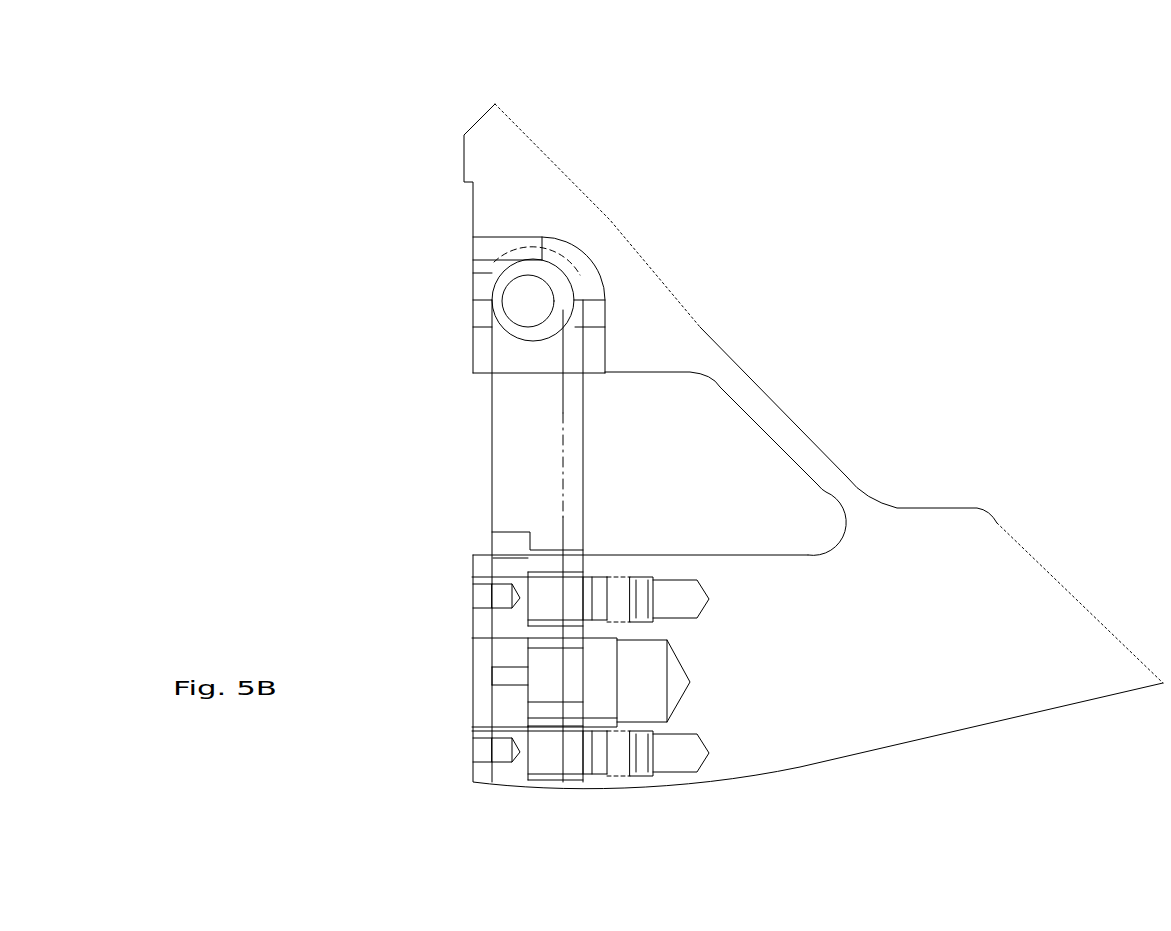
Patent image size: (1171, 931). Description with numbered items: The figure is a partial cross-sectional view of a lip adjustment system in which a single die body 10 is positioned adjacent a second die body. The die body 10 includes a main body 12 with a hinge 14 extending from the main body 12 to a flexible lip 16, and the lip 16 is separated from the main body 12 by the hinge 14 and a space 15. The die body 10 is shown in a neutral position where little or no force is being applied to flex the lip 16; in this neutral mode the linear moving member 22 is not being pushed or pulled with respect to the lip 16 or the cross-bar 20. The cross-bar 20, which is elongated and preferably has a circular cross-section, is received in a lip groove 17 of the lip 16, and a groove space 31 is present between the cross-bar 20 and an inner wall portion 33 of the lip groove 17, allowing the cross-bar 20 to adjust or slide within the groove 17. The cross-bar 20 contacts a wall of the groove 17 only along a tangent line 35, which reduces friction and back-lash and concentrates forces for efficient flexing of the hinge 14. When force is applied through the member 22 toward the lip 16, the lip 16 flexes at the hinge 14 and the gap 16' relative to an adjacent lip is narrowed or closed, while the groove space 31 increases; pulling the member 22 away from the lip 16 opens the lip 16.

The die body 10 is at (1015, 485).
The main body 12 is at (856, 658).
The hinge 14 is at (822, 387).
The space 15 is at (655, 502).
The flexible lip 16 is at (604, 270).
The gap 16' is at (585, 93).
The lip groove 17 is at (445, 282).
The cross-bar 20 is at (528, 303).
The linear moving member 22 is at (525, 477).
The groove space 31 is at (553, 318).
The inner wall portion 33 is at (568, 318).
The tangent line 35 is at (522, 338).